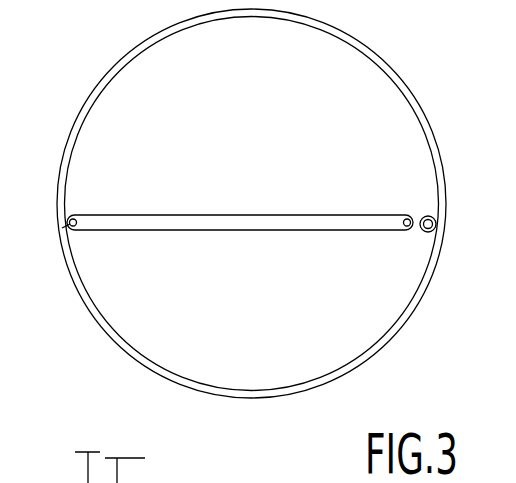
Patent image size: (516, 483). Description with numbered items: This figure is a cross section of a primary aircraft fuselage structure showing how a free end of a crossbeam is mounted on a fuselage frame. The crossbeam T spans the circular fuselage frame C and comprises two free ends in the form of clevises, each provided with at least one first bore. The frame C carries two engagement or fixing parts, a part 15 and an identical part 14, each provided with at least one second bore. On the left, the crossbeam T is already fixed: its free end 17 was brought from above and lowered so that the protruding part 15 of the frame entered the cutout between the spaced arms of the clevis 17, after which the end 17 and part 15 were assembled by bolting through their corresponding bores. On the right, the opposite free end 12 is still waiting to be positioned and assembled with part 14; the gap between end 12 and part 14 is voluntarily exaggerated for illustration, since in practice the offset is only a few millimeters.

The fuselage frame C is at (414, 97).
The crossbeam T is at (223, 214).
The free end 12 is at (403, 214).
The engagement or fixing part 14 is at (423, 232).
The engagement or fixing part 15 is at (61, 231).
The free end 17 is at (78, 213).